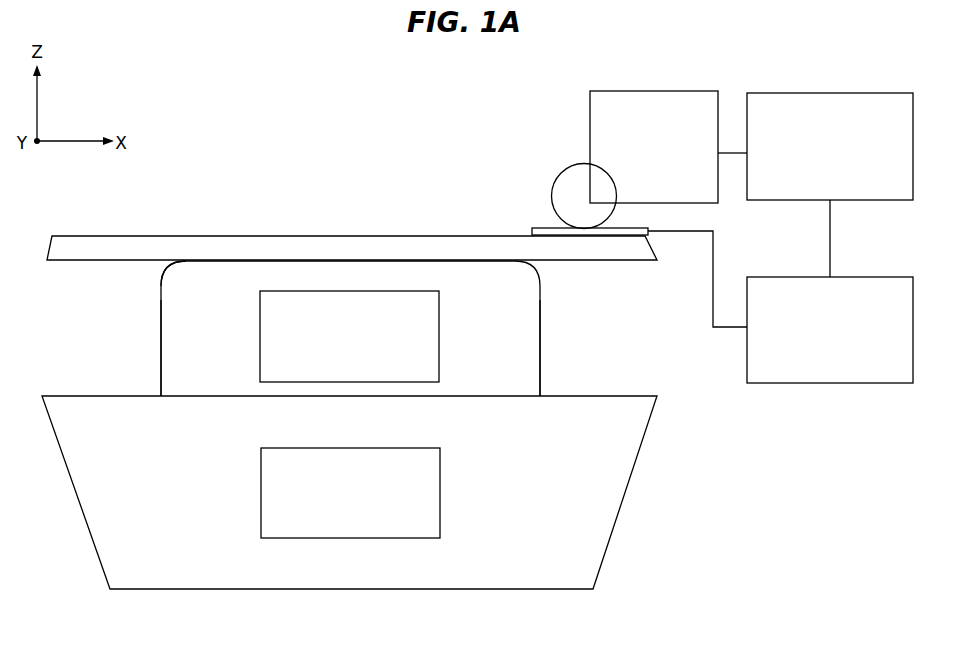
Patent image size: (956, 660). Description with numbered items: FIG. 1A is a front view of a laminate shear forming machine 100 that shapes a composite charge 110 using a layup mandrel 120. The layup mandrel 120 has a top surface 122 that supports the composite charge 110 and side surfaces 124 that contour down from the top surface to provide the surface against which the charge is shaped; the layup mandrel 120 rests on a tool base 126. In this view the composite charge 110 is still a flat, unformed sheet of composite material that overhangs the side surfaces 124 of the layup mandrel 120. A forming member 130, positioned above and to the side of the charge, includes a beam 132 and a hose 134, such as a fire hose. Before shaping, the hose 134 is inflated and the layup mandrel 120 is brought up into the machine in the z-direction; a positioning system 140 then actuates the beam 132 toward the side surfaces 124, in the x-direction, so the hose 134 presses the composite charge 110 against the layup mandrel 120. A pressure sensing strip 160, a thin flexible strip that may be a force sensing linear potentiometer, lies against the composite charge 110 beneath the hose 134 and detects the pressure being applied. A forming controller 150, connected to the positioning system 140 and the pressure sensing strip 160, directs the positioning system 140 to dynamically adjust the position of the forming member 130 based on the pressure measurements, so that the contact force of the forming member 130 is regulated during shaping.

The laminate shear forming machine 100 is at (254, 88).
The composite charge 110 is at (247, 236).
The layup mandrel 120 is at (332, 362).
The top surface 122 is at (239, 262).
The side surfaces 124 is at (161, 342).
The tool base 126 is at (332, 523).
The forming member 130 is at (550, 126).
The beam 132 is at (683, 91).
The hose 134 is at (559, 175).
The positioning system 140 is at (812, 184).
The forming controller 150 is at (812, 368).
The pressure sensing strip 160 is at (532, 228).